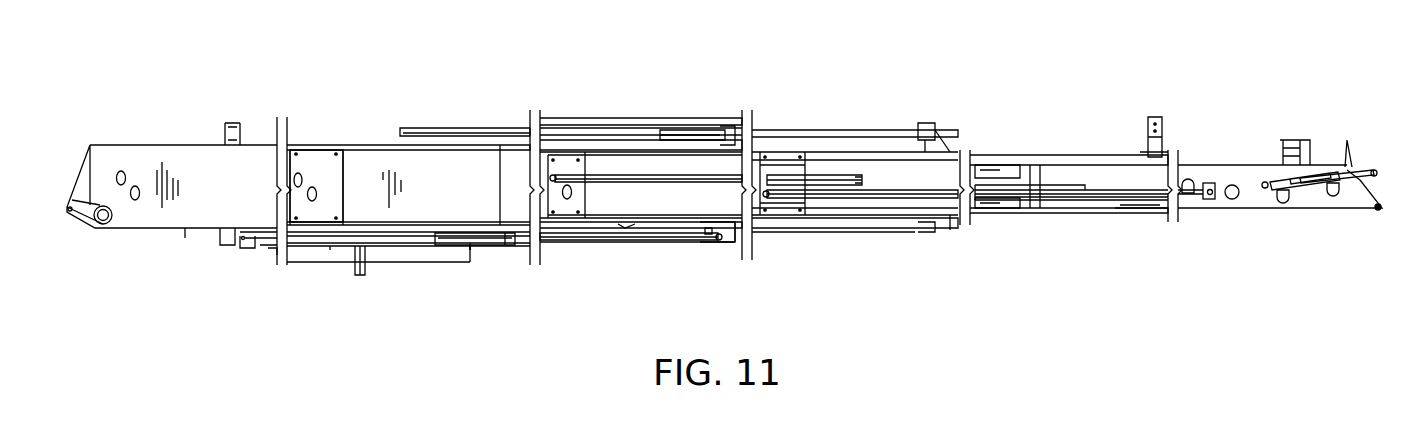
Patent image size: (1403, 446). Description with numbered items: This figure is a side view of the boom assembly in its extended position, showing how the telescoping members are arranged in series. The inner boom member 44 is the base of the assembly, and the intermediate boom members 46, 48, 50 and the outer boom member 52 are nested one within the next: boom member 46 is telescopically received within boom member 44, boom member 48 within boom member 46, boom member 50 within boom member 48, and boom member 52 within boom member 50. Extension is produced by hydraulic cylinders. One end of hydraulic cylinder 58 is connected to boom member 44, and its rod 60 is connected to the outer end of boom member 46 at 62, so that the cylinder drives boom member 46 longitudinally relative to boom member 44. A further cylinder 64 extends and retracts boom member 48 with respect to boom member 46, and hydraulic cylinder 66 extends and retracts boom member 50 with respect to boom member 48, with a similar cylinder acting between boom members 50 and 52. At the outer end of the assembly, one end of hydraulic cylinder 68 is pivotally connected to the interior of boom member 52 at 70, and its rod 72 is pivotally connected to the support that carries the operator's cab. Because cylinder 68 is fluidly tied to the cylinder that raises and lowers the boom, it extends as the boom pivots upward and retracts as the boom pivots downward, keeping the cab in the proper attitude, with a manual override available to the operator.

The inner boom member 44 is at (191, 160).
The intermediate boom member 46 is at (665, 160).
The intermediate boom member 48 is at (870, 167).
The intermediate boom member 50 is at (1047, 160).
The outer boom member 52 is at (1202, 172).
The hydraulic cylinder 58 is at (407, 238).
The rod 60 is at (637, 240).
The connection of rod to boom member 62 is at (719, 240).
The second hydraulic cylinder 64 is at (598, 122).
The hydraulic cylinder 66 is at (803, 160).
The hydraulic cylinder 68 is at (1287, 190).
The pivotal connection 70 is at (1263, 188).
The rod 72 is at (1345, 172).